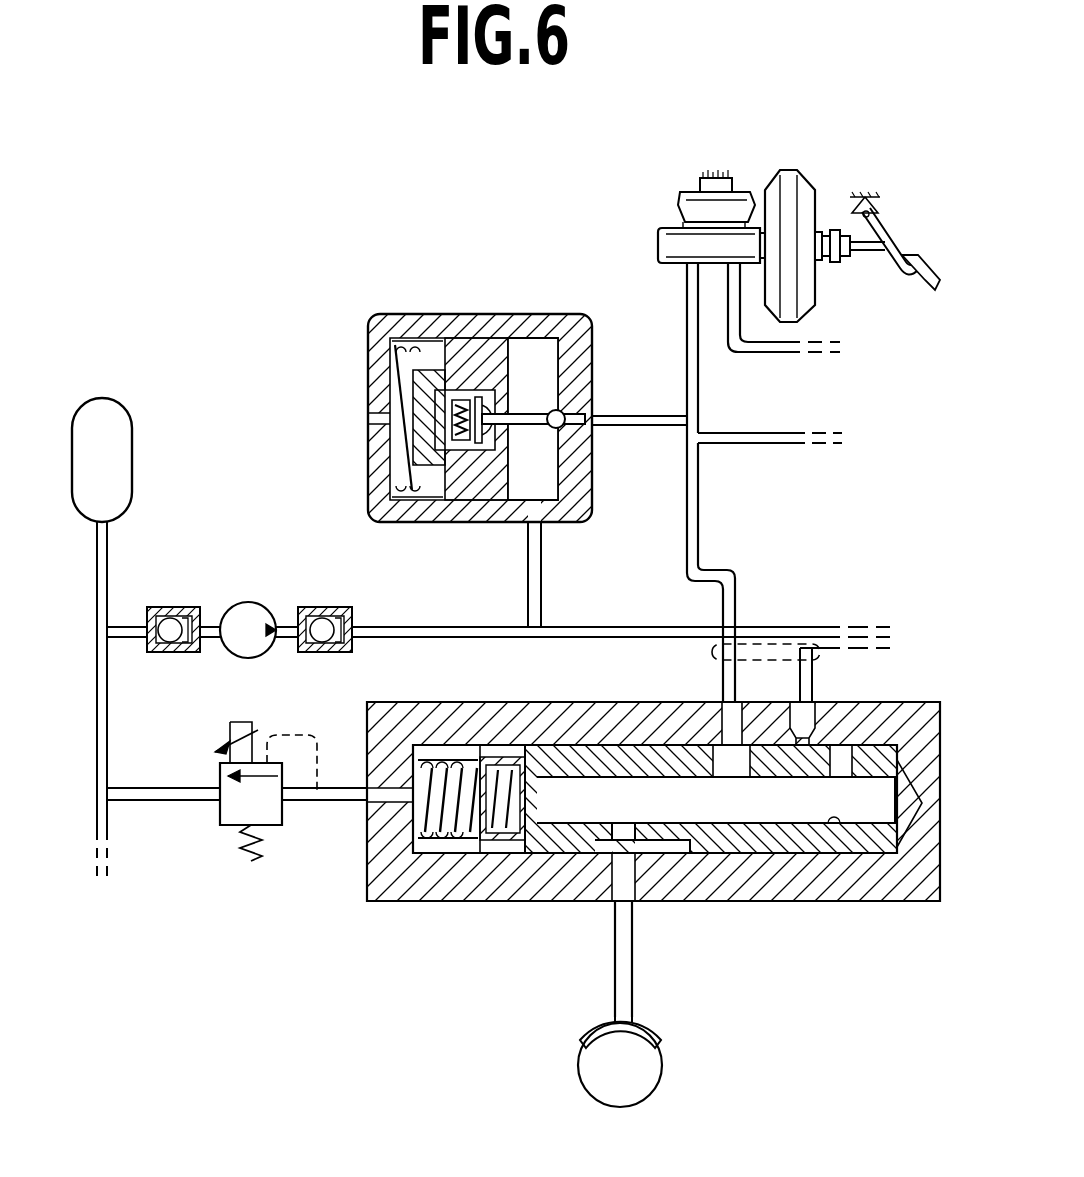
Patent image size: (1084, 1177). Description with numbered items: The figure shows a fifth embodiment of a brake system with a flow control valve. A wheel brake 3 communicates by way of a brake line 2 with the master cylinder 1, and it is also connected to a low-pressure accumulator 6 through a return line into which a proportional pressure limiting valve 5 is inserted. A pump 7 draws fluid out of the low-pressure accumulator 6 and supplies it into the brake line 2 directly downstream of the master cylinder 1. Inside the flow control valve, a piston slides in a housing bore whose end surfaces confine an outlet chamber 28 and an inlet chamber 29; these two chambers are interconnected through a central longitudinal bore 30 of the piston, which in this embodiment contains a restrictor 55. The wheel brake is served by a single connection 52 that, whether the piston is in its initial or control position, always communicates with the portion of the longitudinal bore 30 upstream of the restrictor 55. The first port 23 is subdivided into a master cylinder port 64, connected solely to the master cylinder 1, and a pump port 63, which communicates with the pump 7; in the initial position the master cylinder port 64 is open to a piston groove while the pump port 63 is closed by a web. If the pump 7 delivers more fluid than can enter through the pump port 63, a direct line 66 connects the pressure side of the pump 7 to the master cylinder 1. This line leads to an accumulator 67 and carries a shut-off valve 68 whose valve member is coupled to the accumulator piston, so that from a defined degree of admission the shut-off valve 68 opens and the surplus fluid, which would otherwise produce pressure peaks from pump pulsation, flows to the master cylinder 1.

The master cylinder 1 is at (650, 215).
The brake line 2 is at (698, 503).
The wheel brake 3 is at (659, 1040).
The proportional pressure limiting valve 5 is at (265, 830).
The low-pressure accumulator 6 is at (118, 428).
The pump 7 is at (246, 604).
The first port 23 is at (749, 645).
The outlet chamber 28 is at (456, 845).
The inlet chamber 29 is at (905, 815).
The central longitudinal bore 30 is at (836, 823).
The single connection 52 is at (640, 900).
The restrictor 55 is at (520, 815).
The pump port 63 is at (812, 718).
The master cylinder port 64 is at (724, 718).
The direct line 66 is at (643, 414).
The accumulator 67 is at (540, 362).
The shut-off valve 68 is at (566, 425).